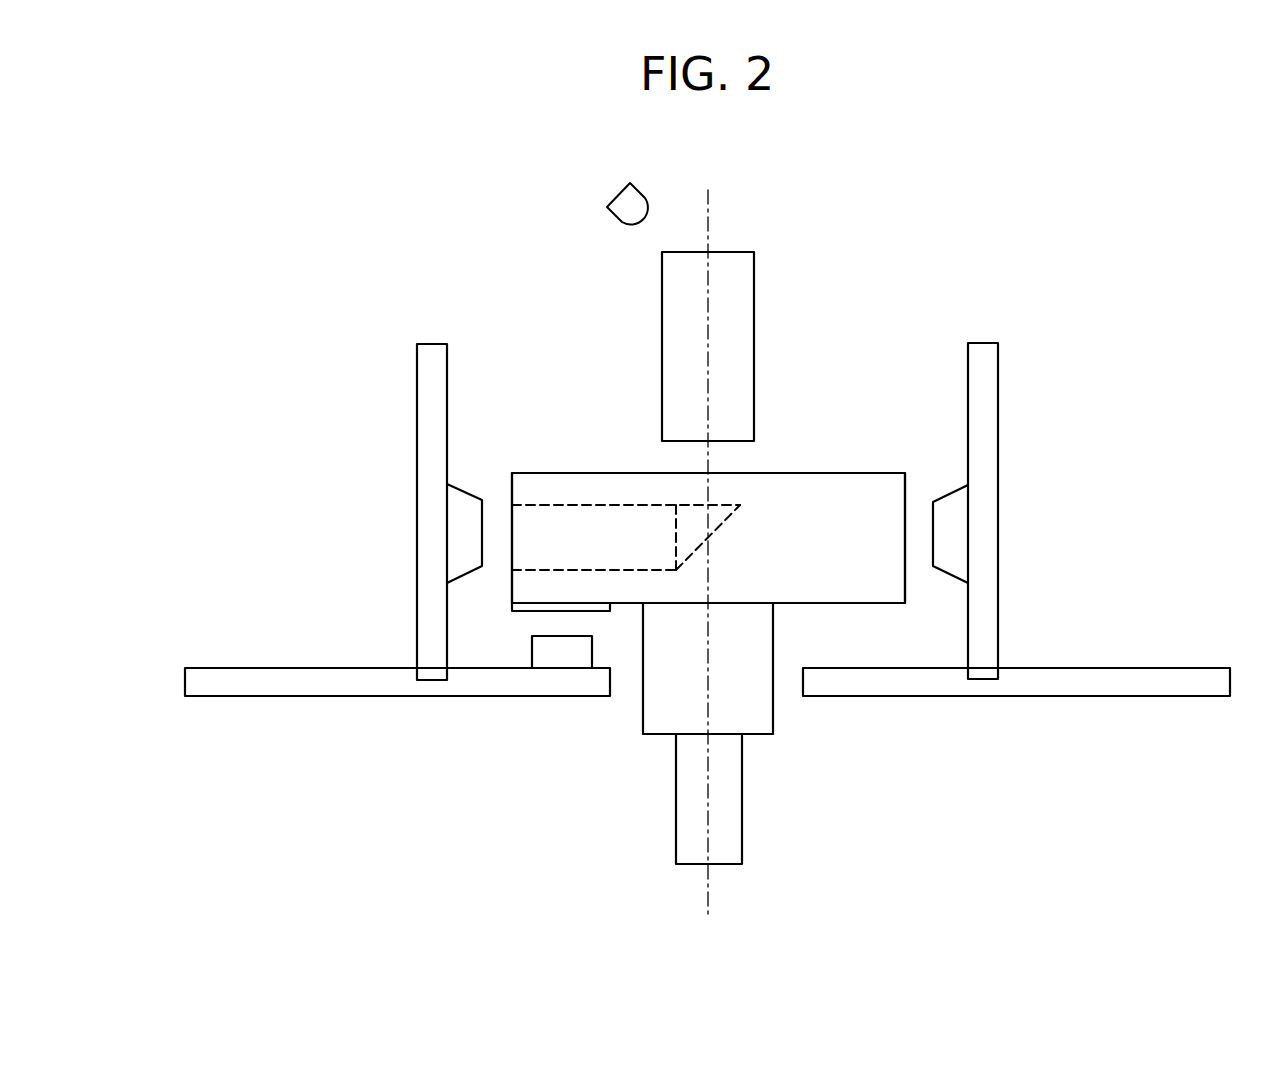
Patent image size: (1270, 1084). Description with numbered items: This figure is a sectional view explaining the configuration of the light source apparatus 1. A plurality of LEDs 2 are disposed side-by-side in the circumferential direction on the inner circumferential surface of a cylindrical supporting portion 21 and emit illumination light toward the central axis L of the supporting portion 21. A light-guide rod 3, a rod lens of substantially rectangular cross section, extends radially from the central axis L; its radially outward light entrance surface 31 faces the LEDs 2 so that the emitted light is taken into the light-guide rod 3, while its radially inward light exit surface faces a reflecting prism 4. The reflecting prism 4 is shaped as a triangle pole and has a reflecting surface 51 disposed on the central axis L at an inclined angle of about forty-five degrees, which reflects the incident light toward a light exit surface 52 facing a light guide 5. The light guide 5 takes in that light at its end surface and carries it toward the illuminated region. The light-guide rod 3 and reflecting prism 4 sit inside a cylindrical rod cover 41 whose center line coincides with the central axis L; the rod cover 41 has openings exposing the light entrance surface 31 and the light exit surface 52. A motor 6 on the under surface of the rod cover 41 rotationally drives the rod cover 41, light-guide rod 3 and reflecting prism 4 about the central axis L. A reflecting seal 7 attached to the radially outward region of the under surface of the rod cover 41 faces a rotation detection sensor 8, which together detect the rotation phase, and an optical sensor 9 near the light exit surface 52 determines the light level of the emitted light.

The light source apparatus 1 is at (222, 224).
The LED 2 is at (425, 514).
The supporting portion 21 is at (308, 686).
The light-guide rod 3 is at (568, 512).
The light entrance surface 31 is at (512, 527).
The reflecting prism 4 is at (680, 543).
The rod cover 41 is at (880, 473).
The light guide 5 is at (748, 341).
The reflecting surface 51 is at (720, 530).
The light exit surface 52 is at (717, 520).
The motor 6 is at (754, 736).
The reflecting seal 7 is at (526, 608).
The rotation detection sensor 8 is at (558, 662).
The optical sensor 9 is at (620, 203).
The central axis L is at (708, 893).